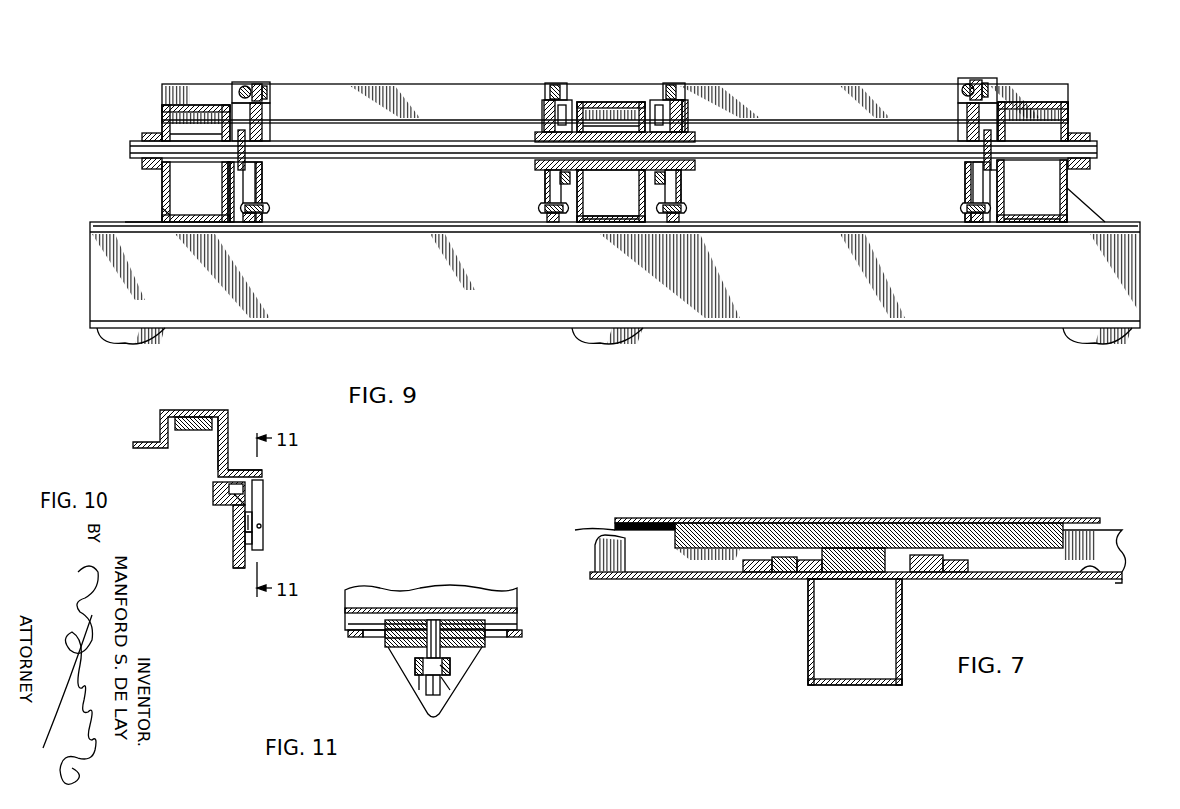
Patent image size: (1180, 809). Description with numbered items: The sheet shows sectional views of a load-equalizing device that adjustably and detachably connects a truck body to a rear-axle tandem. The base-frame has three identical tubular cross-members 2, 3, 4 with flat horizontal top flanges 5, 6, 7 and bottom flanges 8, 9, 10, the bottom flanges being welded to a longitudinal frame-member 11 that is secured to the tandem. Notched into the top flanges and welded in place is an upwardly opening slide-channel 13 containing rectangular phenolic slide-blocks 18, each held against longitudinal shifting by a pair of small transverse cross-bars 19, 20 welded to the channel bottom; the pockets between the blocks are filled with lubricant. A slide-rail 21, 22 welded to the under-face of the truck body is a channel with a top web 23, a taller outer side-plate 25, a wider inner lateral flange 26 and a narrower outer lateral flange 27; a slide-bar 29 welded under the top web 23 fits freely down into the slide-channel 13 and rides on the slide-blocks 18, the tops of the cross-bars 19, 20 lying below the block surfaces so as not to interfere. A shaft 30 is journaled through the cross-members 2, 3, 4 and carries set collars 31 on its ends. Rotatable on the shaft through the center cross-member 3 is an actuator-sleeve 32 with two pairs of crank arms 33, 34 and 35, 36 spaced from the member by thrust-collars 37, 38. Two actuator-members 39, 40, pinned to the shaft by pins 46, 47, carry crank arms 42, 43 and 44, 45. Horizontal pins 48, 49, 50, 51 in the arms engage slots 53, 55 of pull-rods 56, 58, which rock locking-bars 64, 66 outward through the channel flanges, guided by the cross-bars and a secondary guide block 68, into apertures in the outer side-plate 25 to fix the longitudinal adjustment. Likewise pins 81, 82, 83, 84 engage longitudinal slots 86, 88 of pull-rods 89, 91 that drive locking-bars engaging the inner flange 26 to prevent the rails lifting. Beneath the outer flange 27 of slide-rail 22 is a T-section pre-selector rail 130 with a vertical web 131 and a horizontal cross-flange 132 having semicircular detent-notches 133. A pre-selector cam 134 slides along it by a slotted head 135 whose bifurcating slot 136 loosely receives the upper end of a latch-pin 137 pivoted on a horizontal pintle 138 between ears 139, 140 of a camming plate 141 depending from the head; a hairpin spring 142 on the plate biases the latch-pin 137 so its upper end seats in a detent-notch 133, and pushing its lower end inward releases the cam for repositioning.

In FIG. 9, the cross-member 2 is at (162, 120).
In FIG. 9, the cross-member 3 is at (606, 102).
In FIG. 7, the cross-member 3 is at (902, 640).
In FIG. 9, the cross-member 4 is at (1045, 102).
In FIG. 9, the top flange 5 is at (190, 105).
In FIG. 9, the top flange 6 is at (620, 102).
In FIG. 9, the top flange 7 is at (1022, 104).
In FIG. 9, the bottom flange 8 is at (178, 226).
In FIG. 9, the bottom flange 9 is at (611, 225).
In FIG. 7, the bottom flange 9 is at (878, 686).
In FIG. 9, the bottom flange 10 is at (1036, 225).
In FIG. 9, the longitudinal frame-member 11 is at (865, 328).
In FIG. 9, the slide-channel 13 is at (365, 96).
In FIG. 7, the slide-channel 13 is at (1040, 579).
In FIG. 7, the slide-block 18 is at (865, 574).
In FIG. 7, the cross-bar 19 is at (808, 592).
In FIG. 7, the cross-bar 20 is at (905, 578).
In FIG. 7, the slide-rail 21 is at (615, 520).
In FIG. 10, the slide-rail 22 is at (220, 412).
In FIG. 7, the top web 23 is at (645, 522).
In FIG. 7, the outer side-plate 25 is at (592, 529).
In FIG. 10, the inner lateral flange 26 is at (140, 442).
In FIG. 10, the outer lateral flange 27 is at (236, 470).
In FIG. 11, the outer lateral flange 27 is at (514, 608).
In FIG. 10, the slide-bar 29 is at (190, 417).
In FIG. 7, the slide-bar 29 is at (993, 540).
In FIG. 9, the shaft 30 is at (420, 158).
In FIG. 9, the set collar 31 is at (142, 165).
In FIG. 9, the actuator-sleeve 32 is at (695, 168).
In FIG. 9, the crank arm 33 is at (545, 110).
In FIG. 9, the crank arm 34 is at (545, 190).
In FIG. 9, the crank arm 35 is at (680, 90).
In FIG. 9, the crank arm 36 is at (682, 195).
In FIG. 9, the thrust-collar 37 is at (550, 172).
In FIG. 9, the thrust-collar 38 is at (682, 180).
In FIG. 9, the actuator-member 39 is at (262, 170).
In FIG. 9, the actuator-member 40 is at (958, 168).
In FIG. 9, the crank arm 42 is at (258, 86).
In FIG. 9, the crank arm 43 is at (262, 196).
In FIG. 9, the crank arm 44 is at (975, 86).
In FIG. 9, the crank arm 45 is at (973, 190).
In FIG. 9, the pin 46 is at (228, 176).
In FIG. 9, the pin 47 is at (997, 177).
In FIG. 9, the horizontal pin 48 is at (555, 86).
In FIG. 9, the horizontal pin 49 is at (541, 208).
In FIG. 9, the horizontal pin 50 is at (670, 86).
In FIG. 9, the horizontal pin 51 is at (689, 208).
In FIG. 9, the slot 53 is at (553, 222).
In FIG. 9, the slot 55 is at (672, 222).
In FIG. 9, the pull-rod 56 is at (611, 196).
In FIG. 9, the pull-rod 58 is at (611, 205).
In FIG. 7, the locking-bar 64 is at (785, 573).
In FIG. 7, the locking-bar 66 is at (945, 574).
In FIG. 9, the secondary guide block 68 is at (686, 118).
In FIG. 7, the secondary guide block 68 is at (748, 573).
In FIG. 9, the horizontal pin 81 is at (245, 90).
In FIG. 9, the horizontal pin 82 is at (272, 209).
In FIG. 9, the horizontal pin 83 is at (962, 90).
In FIG. 9, the horizontal pin 84 is at (961, 208).
In FIG. 9, the longitudinal slot 86 is at (250, 216).
In FIG. 9, the longitudinal slot 88 is at (977, 218).
In FIG. 9, the pull-rod 89 is at (236, 190).
In FIG. 9, the pull-rod 91 is at (1002, 190).
In FIG. 10, the pre-selector rail 130 is at (258, 486).
In FIG. 11, the pre-selector rail 130 is at (522, 634).
In FIG. 10, the vertical web 131 is at (225, 488).
In FIG. 11, the vertical web 131 is at (355, 628).
In FIG. 10, the horizontal cross-flange 132 is at (236, 500).
In FIG. 11, the horizontal cross-flange 132 is at (355, 637).
In FIG. 11, the detent-notch 133 is at (372, 630).
In FIG. 10, the pre-selector cam 134 is at (230, 525).
In FIG. 11, the pre-selector cam 134 is at (450, 715).
In FIG. 10, the slotted head 135 is at (228, 493).
In FIG. 11, the slotted head 135 is at (392, 642).
In FIG. 11, the bifurcating slot 136 is at (422, 650).
In FIG. 10, the latch-pin 137 is at (263, 545).
In FIG. 11, the latch-pin 137 is at (432, 697).
In FIG. 10, the horizontal pintle 138 is at (265, 530).
In FIG. 11, the horizontal pintle 138 is at (462, 668).
In FIG. 11, the ear 139 is at (420, 680).
In FIG. 10, the ear 140 is at (263, 525).
In FIG. 11, the ear 140 is at (452, 666).
In FIG. 10, the camming plate 141 is at (240, 566).
In FIG. 11, the camming plate 141 is at (448, 692).
In FIG. 10, the hairpin spring 142 is at (240, 550).